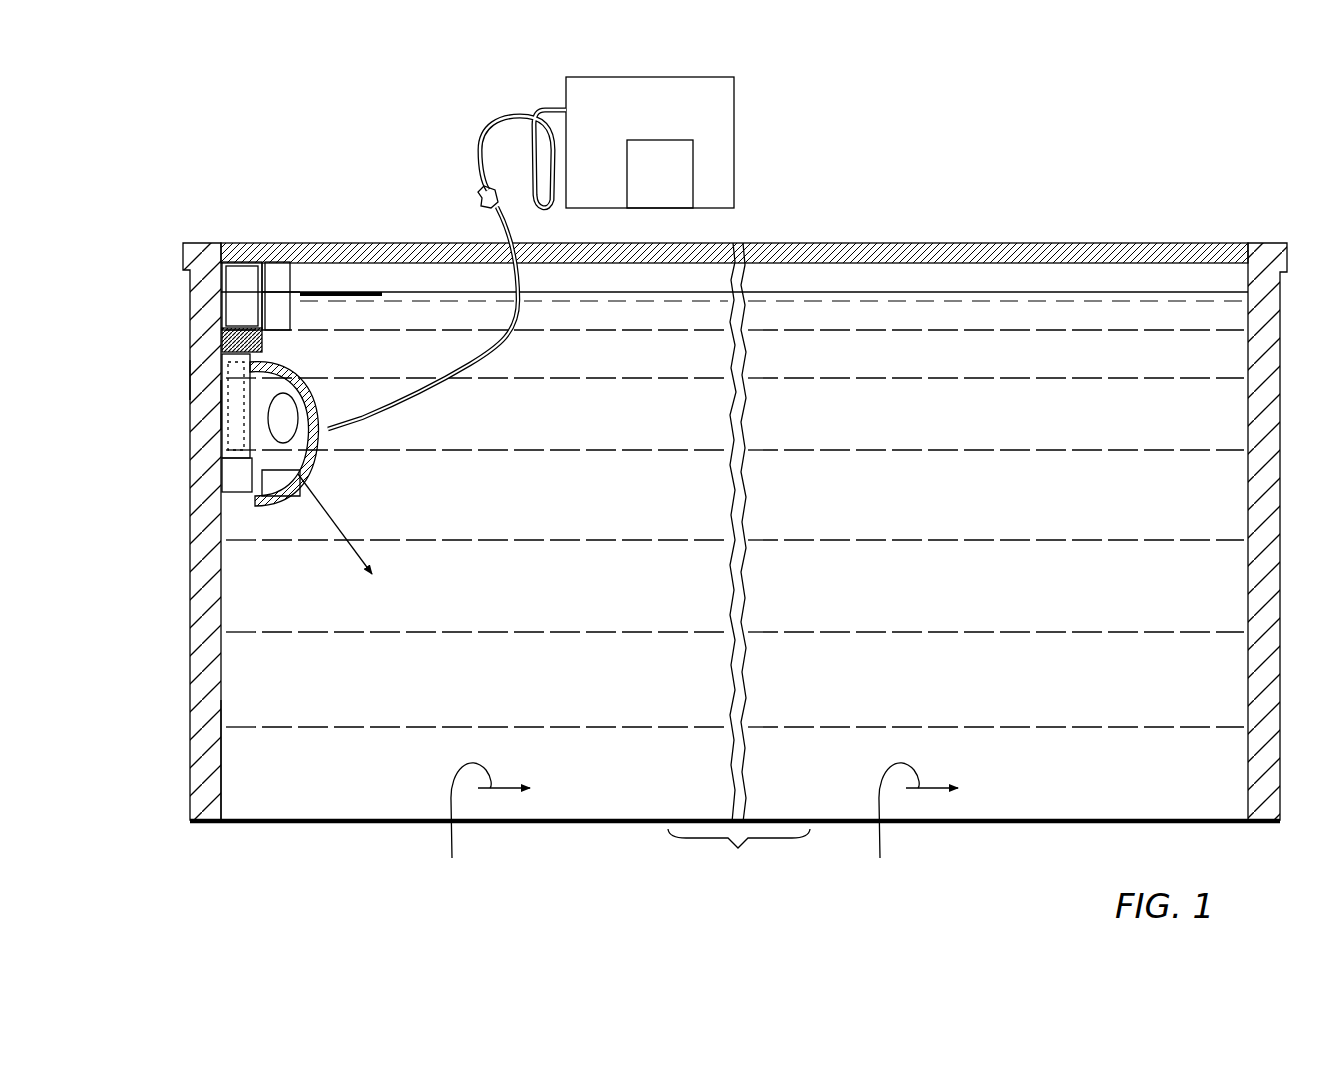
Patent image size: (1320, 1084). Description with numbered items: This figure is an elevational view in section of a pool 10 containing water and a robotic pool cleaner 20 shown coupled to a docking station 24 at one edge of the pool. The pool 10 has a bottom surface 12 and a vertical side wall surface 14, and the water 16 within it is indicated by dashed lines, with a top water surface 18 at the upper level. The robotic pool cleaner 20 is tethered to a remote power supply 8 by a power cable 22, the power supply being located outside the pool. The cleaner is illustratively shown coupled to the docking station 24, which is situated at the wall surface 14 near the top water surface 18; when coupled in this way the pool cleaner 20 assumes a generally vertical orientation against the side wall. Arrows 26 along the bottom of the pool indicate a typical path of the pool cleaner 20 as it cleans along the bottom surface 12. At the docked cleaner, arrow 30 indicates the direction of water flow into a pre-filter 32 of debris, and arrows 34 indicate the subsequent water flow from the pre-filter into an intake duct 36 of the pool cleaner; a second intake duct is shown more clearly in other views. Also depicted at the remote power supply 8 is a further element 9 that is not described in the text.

The remote power supply 8 is at (712, 101).
The display 9 is at (680, 176).
The pool 10 is at (1091, 198).
The bottom surface 12 is at (1108, 826).
The vertical side wall surface 14 is at (222, 746).
The water 16 is at (599, 692).
The top water surface 18 is at (458, 273).
The robotic pool cleaner 20 is at (176, 451).
The power cable 22 is at (443, 398).
The docking station 24 is at (192, 379).
The arrows 26 is at (698, 824).
The arrow 30 is at (256, 265).
The pre-filter 32 is at (230, 336).
The arrows 34 is at (192, 405).
The intake duct 36 is at (242, 513).